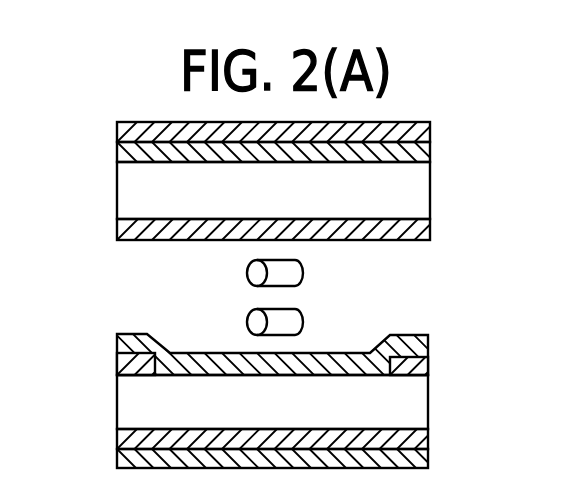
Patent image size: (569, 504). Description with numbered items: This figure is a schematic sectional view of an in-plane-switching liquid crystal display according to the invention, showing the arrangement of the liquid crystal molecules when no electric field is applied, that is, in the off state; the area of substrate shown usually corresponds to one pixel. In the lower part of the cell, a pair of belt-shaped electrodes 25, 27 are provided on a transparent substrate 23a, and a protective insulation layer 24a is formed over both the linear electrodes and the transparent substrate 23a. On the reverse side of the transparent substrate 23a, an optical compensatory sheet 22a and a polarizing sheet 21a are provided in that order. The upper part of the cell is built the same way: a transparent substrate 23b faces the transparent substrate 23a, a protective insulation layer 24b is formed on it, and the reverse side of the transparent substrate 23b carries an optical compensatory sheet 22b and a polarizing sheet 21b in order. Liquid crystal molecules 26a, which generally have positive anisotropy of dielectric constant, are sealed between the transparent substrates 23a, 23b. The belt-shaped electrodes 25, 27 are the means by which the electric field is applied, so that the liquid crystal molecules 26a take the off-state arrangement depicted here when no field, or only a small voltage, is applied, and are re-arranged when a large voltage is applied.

The polarizing sheet 21a is at (420, 462).
The optical compensatory sheet 22a is at (420, 442).
The transparent substrate 23a is at (410, 400).
The protective insulation layer 24a is at (147, 333).
The belt-shaped electrode 25 is at (120, 365).
The belt-shaped electrode 27 is at (420, 367).
The liquid crystal molecules 26a is at (295, 272).
The polarizing sheet 21b is at (420, 132).
The optical compensatory sheet 22b is at (418, 153).
The transparent substrate 23b is at (413, 192).
The protective insulation layer 24b is at (420, 232).